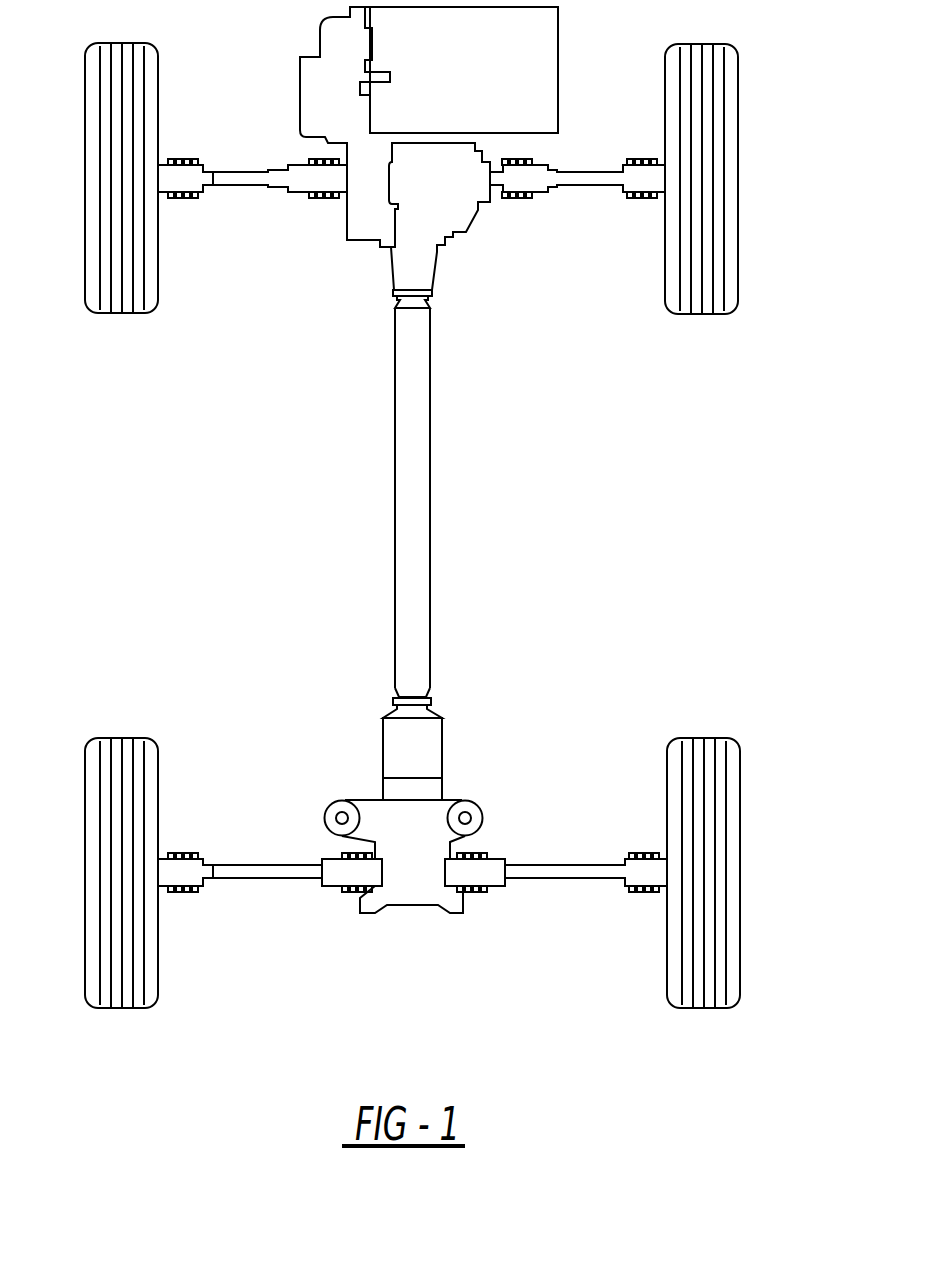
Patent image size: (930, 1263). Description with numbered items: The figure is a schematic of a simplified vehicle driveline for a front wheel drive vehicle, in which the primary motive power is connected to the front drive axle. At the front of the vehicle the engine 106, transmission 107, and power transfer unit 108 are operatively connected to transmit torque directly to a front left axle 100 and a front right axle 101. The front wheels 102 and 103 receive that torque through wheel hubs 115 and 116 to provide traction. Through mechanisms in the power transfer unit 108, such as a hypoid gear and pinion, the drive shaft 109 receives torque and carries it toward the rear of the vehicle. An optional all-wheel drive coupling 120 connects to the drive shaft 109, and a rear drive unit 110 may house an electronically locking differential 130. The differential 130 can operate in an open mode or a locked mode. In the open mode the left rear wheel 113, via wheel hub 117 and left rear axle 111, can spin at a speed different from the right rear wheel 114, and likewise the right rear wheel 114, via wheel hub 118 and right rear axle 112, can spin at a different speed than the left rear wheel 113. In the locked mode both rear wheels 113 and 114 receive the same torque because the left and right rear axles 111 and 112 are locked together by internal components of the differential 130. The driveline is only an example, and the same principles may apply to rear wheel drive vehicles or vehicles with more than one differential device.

The front left axle 100 is at (243, 186).
The front right axle 101 is at (587, 188).
The wheel 102 is at (120, 313).
The wheel 103 is at (703, 313).
The engine 106 is at (476, 92).
The transmission 107 is at (354, 110).
The power transfer unit 108 is at (468, 200).
The drive shaft 109 is at (431, 442).
The rear drive unit 110 is at (398, 880).
The left rear axle 111 is at (274, 878).
The right rear axle 112 is at (557, 878).
The left rear wheel 113 is at (117, 1008).
The right rear wheel 114 is at (703, 1007).
The wheel hub 115 is at (177, 200).
The wheel hub 116 is at (640, 198).
The wheel hub 117 is at (177, 893).
The wheel hub 118 is at (645, 892).
The all-wheel drive coupling 120 is at (442, 738).
The electronically locking differential 130 is at (403, 848).